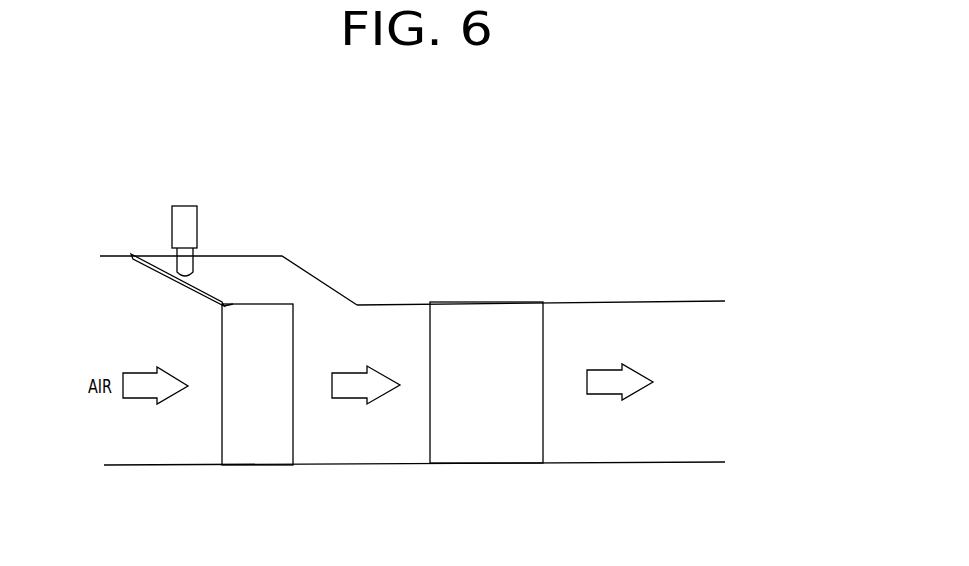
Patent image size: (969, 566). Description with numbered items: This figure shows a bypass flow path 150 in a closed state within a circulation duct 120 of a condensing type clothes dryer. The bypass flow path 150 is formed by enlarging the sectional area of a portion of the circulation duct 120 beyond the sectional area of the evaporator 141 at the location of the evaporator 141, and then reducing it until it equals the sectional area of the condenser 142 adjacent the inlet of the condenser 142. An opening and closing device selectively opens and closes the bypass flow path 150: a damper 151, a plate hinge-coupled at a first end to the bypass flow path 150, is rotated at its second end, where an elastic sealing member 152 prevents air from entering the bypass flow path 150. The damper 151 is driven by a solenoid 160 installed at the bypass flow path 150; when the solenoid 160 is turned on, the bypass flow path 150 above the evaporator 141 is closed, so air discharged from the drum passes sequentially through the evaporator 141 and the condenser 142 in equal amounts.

The circulation duct 120 is at (370, 303).
The evaporator 141 is at (258, 462).
The condenser 142 is at (478, 305).
The bypass flow path 150 is at (228, 272).
The damper 151 is at (152, 260).
The sealing member 152 is at (232, 304).
The solenoid 160 is at (183, 206).